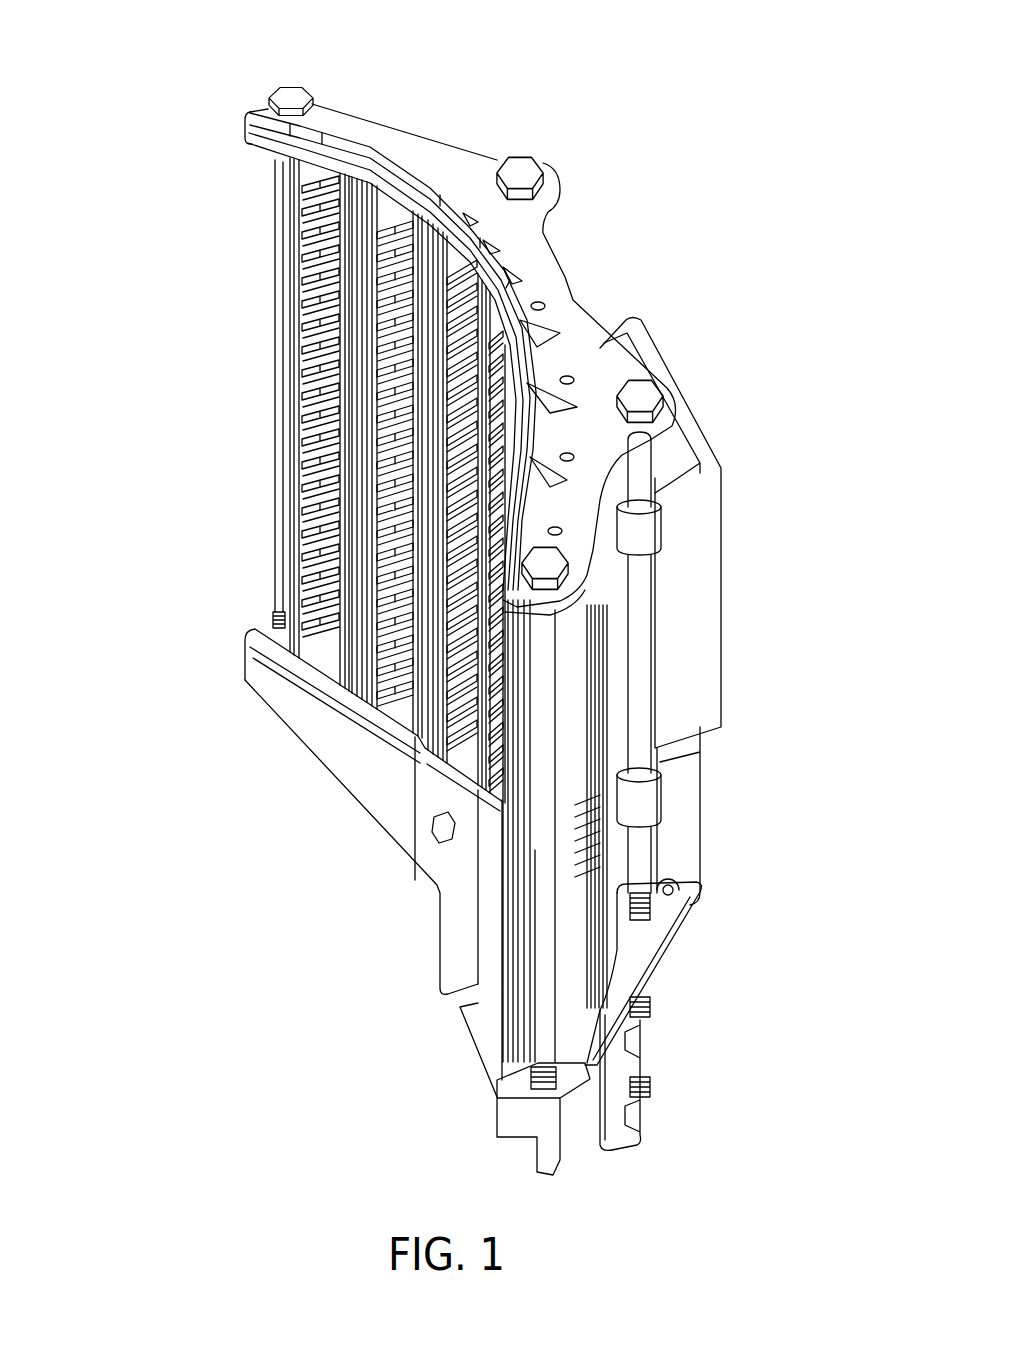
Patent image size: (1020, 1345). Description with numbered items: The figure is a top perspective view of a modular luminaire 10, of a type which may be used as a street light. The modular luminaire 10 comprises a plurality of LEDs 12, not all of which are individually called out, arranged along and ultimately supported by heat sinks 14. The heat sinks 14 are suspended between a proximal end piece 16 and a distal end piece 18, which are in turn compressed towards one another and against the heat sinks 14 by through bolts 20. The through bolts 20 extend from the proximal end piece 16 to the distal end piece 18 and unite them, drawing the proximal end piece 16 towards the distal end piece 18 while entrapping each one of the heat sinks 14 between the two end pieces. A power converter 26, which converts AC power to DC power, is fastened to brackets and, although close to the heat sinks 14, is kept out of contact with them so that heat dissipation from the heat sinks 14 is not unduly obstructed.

The modular luminaire 10 is at (657, 130).
The LEDs 12 is at (168, 447).
The heat sinks 14 is at (328, 70).
The proximal end piece 16 is at (692, 934).
The distal end piece 18 is at (421, 138).
The through bolts 20 is at (522, 150).
The power converter 26 is at (705, 437).